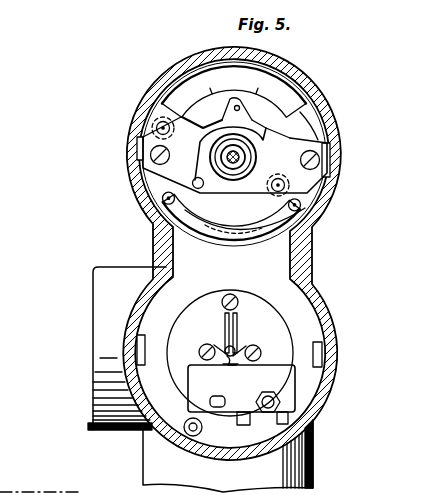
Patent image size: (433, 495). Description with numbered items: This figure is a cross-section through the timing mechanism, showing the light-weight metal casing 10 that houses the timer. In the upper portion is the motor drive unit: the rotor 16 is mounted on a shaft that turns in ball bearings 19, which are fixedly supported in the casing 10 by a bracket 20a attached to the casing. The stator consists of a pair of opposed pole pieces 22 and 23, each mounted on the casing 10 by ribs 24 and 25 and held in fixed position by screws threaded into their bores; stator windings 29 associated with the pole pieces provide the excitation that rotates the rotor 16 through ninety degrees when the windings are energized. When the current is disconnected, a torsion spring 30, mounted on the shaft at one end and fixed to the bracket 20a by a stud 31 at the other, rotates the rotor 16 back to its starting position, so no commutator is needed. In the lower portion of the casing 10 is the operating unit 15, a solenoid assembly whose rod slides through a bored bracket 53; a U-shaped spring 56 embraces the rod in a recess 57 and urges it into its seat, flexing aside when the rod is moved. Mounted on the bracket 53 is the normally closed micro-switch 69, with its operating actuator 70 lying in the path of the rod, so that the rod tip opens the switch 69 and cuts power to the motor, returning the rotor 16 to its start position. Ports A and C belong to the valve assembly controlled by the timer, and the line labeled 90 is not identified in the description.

The casing 10 is at (163, 240).
The operating unit 15 is at (322, 358).
The rotor 16 is at (245, 110).
The ball bearings 19 is at (218, 149).
The bracket 20a is at (290, 141).
The pole piece 22 is at (283, 131).
The pole piece 23 is at (290, 213).
The rib 24 is at (299, 62).
The rib 25 is at (253, 258).
The stator windings 29 is at (185, 88).
The torsion spring 30 is at (195, 165).
The stud 31 is at (193, 185).
The bracket 53 is at (273, 340).
The U-shaped spring 56 is at (240, 326).
The recess 57 is at (229, 367).
The micro-switch 69 is at (287, 391).
The operating actuator 70 is at (239, 352).
The base line 90 is at (60, 494).
The port C is at (95, 323).
The port A is at (313, 475).